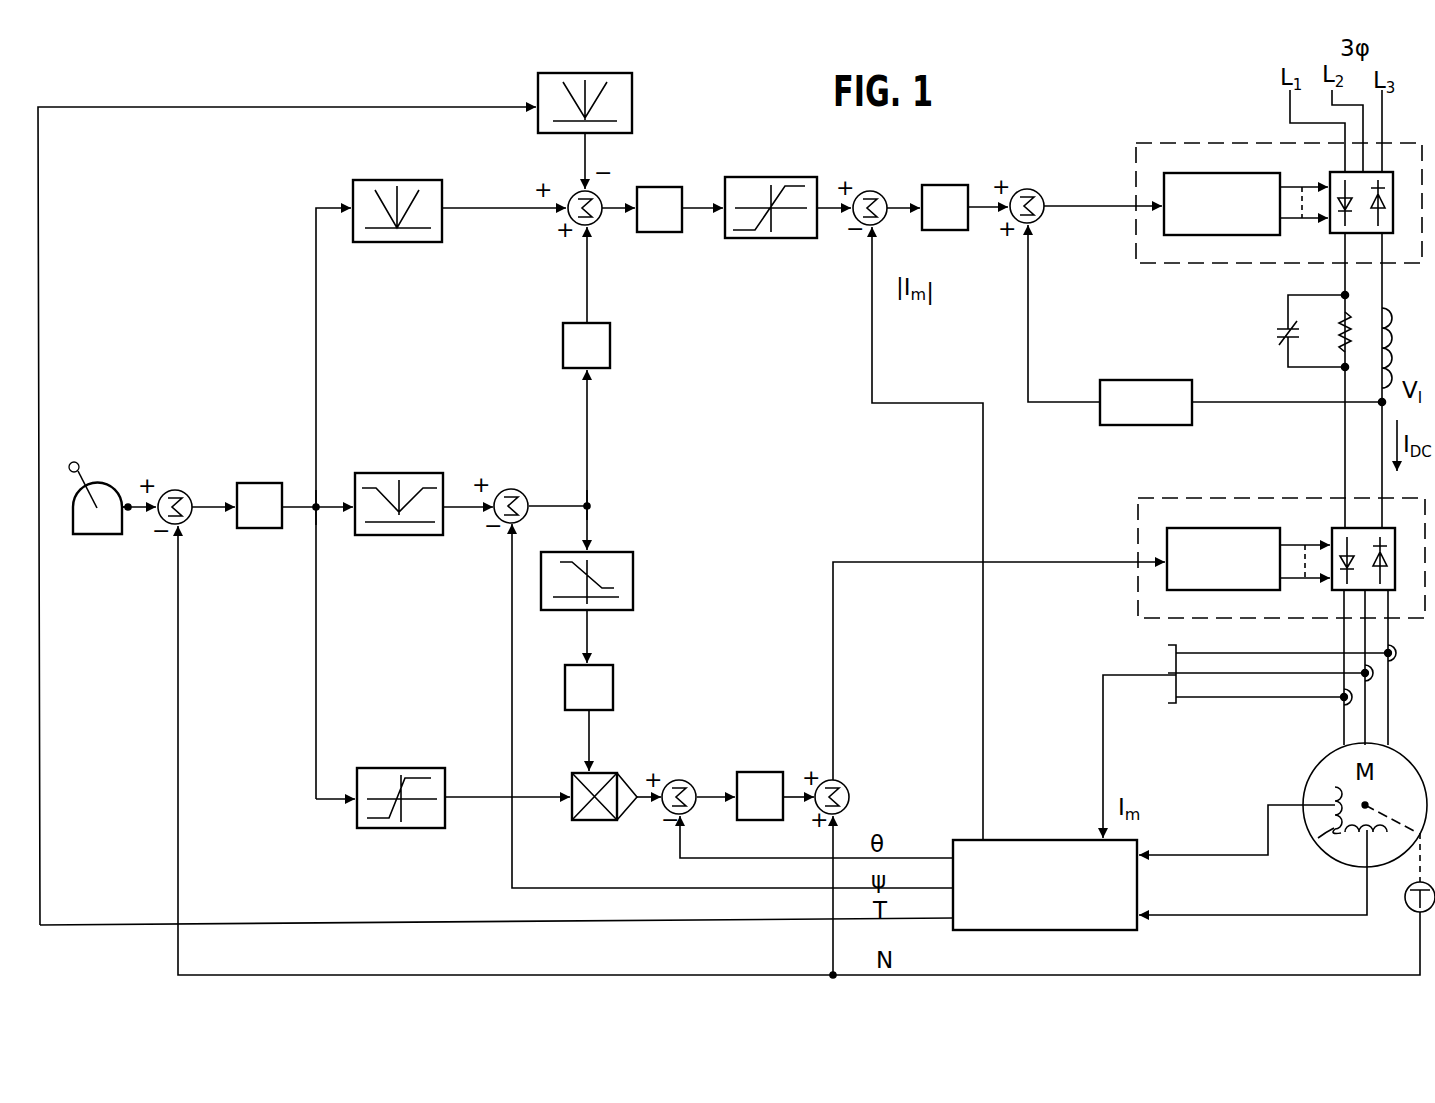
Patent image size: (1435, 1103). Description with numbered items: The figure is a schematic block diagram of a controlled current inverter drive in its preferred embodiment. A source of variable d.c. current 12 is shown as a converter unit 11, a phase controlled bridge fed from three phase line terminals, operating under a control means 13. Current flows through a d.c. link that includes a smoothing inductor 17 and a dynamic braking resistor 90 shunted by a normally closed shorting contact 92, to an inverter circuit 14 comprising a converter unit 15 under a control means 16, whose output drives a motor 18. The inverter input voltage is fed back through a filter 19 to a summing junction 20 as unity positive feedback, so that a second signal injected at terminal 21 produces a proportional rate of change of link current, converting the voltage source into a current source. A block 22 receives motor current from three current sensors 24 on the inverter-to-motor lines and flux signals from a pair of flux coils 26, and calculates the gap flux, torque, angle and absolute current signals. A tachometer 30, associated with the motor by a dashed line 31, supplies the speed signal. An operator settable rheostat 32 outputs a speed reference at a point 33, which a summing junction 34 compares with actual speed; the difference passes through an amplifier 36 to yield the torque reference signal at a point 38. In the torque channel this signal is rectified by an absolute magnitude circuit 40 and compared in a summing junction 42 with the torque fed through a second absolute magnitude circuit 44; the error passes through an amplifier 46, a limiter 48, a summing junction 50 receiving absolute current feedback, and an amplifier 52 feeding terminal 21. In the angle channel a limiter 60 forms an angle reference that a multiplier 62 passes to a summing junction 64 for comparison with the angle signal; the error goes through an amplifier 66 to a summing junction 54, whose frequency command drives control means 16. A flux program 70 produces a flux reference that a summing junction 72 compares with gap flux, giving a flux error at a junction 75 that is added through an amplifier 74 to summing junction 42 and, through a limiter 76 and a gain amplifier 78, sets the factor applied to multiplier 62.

The converter unit 11 is at (1392, 186).
The source of variable d.c. current 12 is at (1250, 263).
The control means 13 is at (1238, 174).
The inverter circuit 14 is at (1138, 598).
The converter unit 15 is at (1390, 544).
The control means 16 is at (1256, 528).
The inductor 17 is at (1394, 340).
The motor 18 is at (1324, 754).
The filter 19 is at (1152, 380).
The summing junction 20 is at (1036, 194).
The terminal 21 is at (970, 212).
The block 22 is at (1064, 840).
The current sensors 24 is at (1352, 700).
The flux coils 26 is at (1322, 840).
The tachometer 30 is at (1414, 913).
The dashed line 31 is at (1414, 856).
The operator settable rheostat 32 is at (112, 485).
The point 33 is at (130, 509).
The summing junction 34 is at (179, 488).
The amplifier 36 is at (258, 485).
The point 38 is at (317, 502).
The absolute magnitude circuit 40 is at (390, 180).
The summing junction 42 is at (600, 226).
The absolute magnitude circuit 44 is at (632, 94).
The amplifier 46 is at (664, 187).
The limiter 48 is at (760, 180).
The summing junction 50 is at (876, 194).
The amplifier 52 is at (956, 186).
The summing junction 54 is at (846, 790).
The limiter 60 is at (410, 768).
The multiplier 62 is at (606, 820).
The summing junction 64 is at (682, 780).
The amplifier 66 is at (758, 773).
The flux program 70 is at (398, 477).
The summing junction 72 is at (516, 490).
The amplifier 74 is at (608, 324).
The junction 75 is at (589, 502).
The limiter 76 is at (634, 552).
The gain amplifier 78 is at (614, 668).
The dynamic braking resistor 90 is at (1336, 320).
The shorting contact 92 is at (1276, 334).